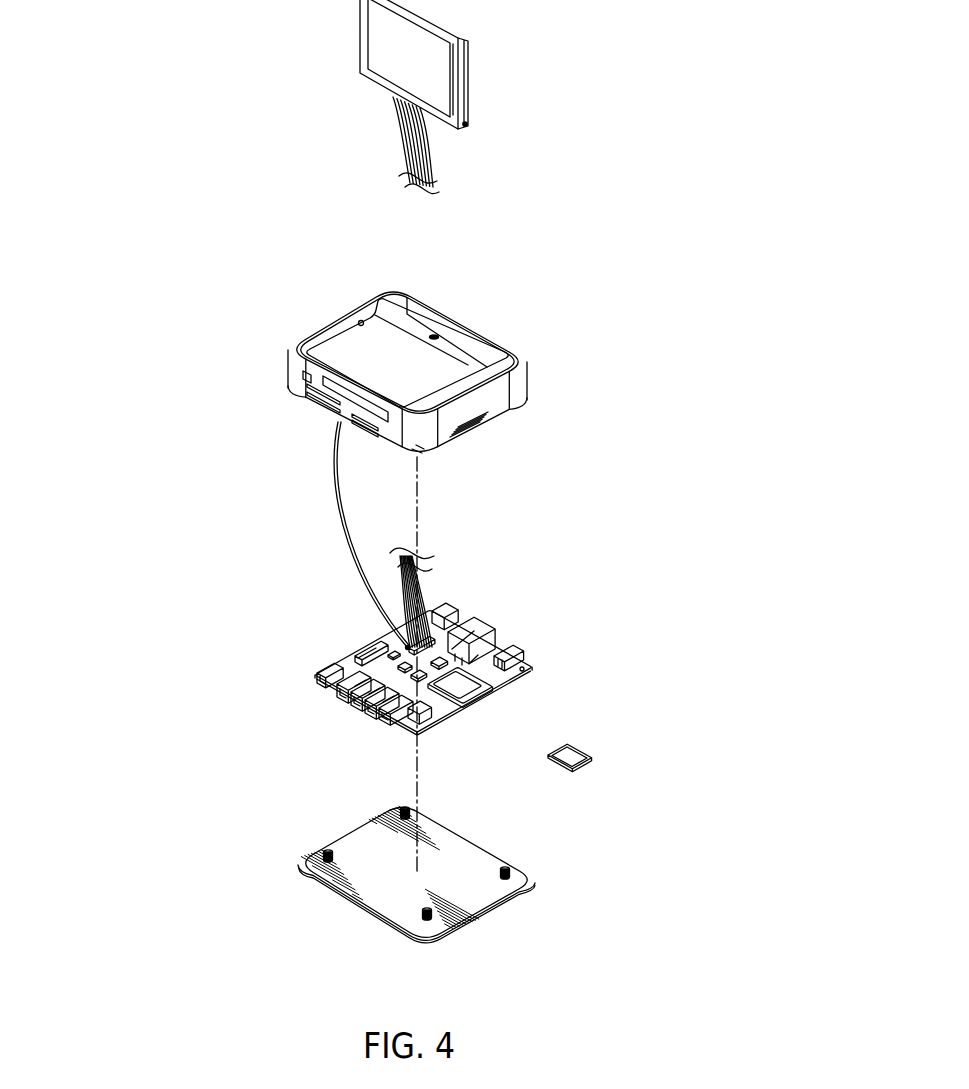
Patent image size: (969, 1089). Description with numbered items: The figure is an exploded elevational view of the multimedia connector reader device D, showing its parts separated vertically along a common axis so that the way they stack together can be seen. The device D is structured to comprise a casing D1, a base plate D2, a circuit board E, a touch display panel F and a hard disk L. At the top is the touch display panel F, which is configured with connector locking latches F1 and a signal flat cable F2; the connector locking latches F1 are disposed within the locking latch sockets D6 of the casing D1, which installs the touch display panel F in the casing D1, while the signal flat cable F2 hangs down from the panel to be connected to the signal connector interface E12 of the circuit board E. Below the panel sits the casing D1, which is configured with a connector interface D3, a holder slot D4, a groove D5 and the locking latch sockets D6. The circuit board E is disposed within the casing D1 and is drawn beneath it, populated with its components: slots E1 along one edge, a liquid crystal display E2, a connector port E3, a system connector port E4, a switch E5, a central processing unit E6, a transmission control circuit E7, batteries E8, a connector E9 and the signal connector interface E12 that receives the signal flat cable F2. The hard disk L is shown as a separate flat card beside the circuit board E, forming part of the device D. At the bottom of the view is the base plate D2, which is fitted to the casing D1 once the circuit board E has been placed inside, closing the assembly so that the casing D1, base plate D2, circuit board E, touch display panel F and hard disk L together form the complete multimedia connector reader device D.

The touch display panel F is at (365, 45).
The connector locking latches F1 is at (468, 124).
The signal flat cable F2 is at (408, 142).
The multimedia connector reader device D is at (265, 652).
The casing D1 is at (510, 393).
The base plate D2 is at (343, 857).
The connector interface D3 is at (435, 335).
The holder slot D4 is at (490, 353).
The groove D5 is at (342, 353).
The locking latch sockets D6 is at (360, 321).
The circuit board E is at (477, 699).
The slots E1 is at (353, 700).
The liquid crystal display E2 is at (425, 714).
The connector port E3 is at (327, 682).
The system connector port E4 is at (470, 620).
The switch E5 is at (515, 648).
The central processing unit E6 is at (382, 656).
The transmission control circuit E7 is at (422, 684).
The batteries E8 is at (360, 652).
The connector E9 is at (443, 603).
The signal connector interface E12 is at (410, 640).
The hard disk L is at (578, 752).